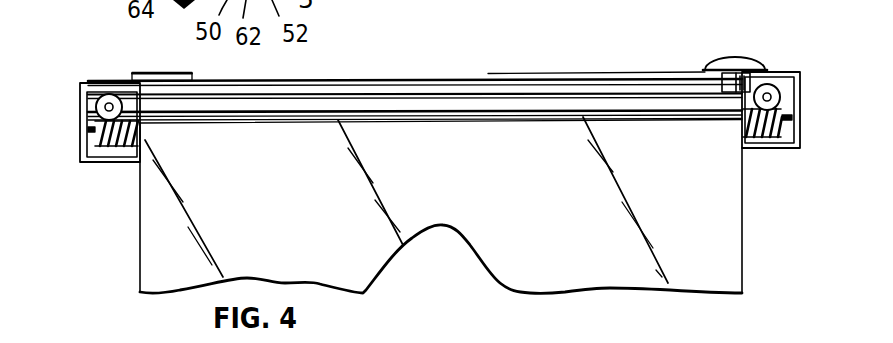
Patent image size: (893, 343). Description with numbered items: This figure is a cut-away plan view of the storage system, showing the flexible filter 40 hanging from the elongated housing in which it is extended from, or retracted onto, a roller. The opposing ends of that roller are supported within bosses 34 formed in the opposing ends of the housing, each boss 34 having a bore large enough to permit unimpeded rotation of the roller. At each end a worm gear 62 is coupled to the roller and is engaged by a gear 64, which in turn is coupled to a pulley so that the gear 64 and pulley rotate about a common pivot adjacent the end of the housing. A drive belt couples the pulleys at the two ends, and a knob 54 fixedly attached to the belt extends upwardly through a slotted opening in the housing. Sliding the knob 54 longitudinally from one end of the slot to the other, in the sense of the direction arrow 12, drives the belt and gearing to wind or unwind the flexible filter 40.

The direction arrow 12 is at (363, 67).
The boss 34 is at (80, 162).
The flexible filter 40 is at (531, 192).
The knob 54 is at (737, 57).
The worm gear 62 is at (90, 143).
The gear 64 is at (104, 107).